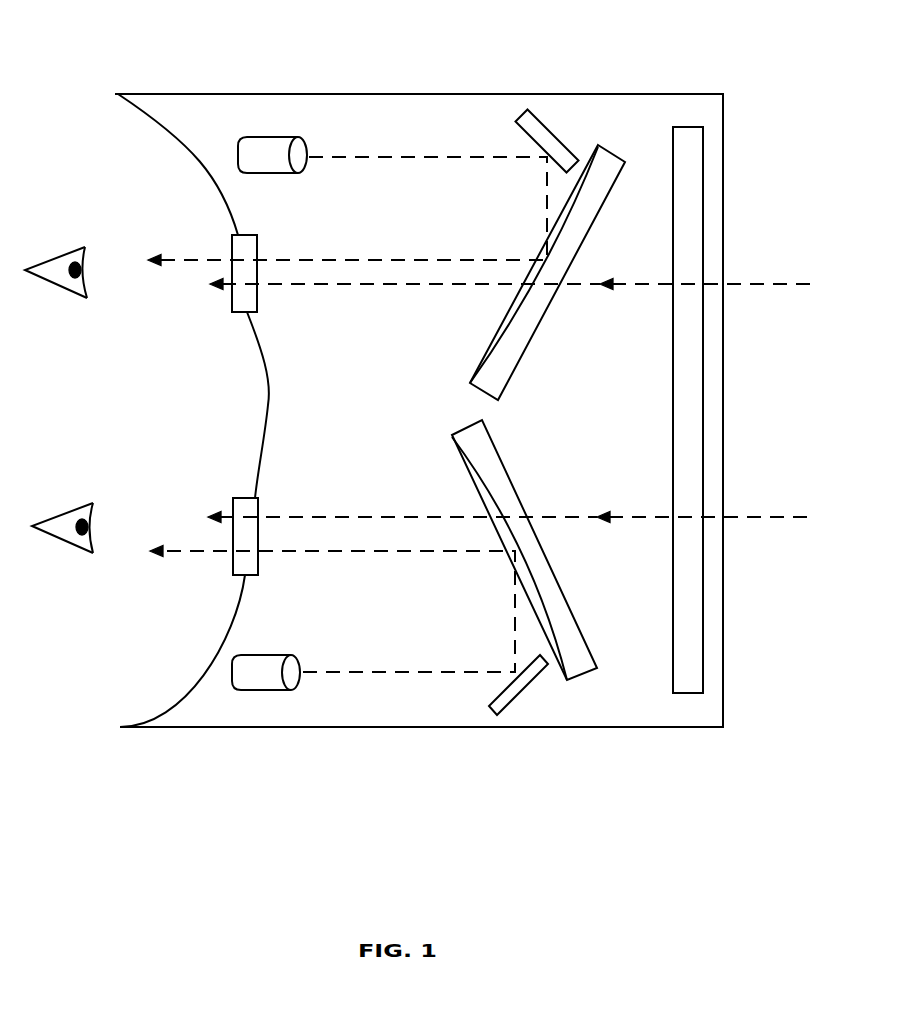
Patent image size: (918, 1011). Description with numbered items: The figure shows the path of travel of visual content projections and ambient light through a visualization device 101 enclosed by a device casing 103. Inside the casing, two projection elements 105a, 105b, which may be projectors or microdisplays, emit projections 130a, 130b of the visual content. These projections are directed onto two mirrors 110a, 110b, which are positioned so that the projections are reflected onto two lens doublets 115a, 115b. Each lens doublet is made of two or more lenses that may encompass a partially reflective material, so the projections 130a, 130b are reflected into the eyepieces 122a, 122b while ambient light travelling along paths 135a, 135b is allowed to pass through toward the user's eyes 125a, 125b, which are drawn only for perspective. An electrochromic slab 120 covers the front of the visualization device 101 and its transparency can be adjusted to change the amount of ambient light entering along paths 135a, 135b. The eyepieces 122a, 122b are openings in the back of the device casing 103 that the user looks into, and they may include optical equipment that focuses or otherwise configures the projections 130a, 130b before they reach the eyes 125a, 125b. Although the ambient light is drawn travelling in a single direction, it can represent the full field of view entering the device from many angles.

The visualization device 101 is at (668, 822).
The device casing 103 is at (405, 93).
The projection element 105a is at (272, 137).
The projection element 105b is at (265, 690).
The mirror 110a is at (553, 135).
The mirror 110b is at (517, 703).
The lens doublet 115a is at (522, 355).
The lens doublet 115b is at (518, 497).
The electrochromic slab 120 is at (704, 180).
The eyepiece 122a is at (247, 314).
The eyepiece 122b is at (243, 498).
The user's eye 125a is at (56, 285).
The user's eye 125b is at (62, 541).
The projection of the visual content 130a is at (184, 260).
The projection of the visual content 130b is at (200, 551).
The path for ambient light 135a is at (733, 284).
The path for ambient light 135b is at (733, 516).